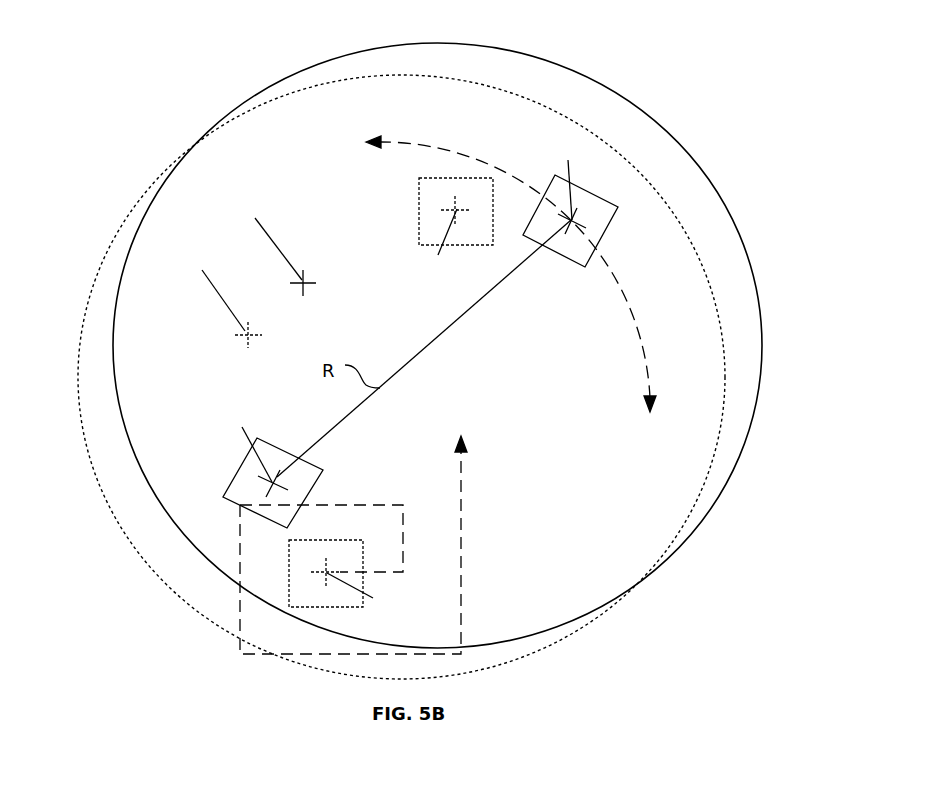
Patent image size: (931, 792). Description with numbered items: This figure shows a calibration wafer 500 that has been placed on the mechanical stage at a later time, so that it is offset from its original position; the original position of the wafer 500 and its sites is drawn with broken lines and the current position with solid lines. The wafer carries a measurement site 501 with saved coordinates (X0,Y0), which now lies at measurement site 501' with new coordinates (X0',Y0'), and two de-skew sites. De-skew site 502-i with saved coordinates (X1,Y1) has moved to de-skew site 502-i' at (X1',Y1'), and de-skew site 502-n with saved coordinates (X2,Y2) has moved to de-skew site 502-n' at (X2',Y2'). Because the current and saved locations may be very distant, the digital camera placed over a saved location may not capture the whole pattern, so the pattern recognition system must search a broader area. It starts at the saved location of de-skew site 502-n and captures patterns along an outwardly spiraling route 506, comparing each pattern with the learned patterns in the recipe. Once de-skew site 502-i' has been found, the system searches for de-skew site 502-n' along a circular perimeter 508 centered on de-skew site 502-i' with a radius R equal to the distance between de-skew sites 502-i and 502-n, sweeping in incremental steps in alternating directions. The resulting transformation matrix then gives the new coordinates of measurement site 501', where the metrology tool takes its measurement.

The wafer 500 is at (723, 277).
The measurement site 501 is at (209, 321).
The measurement site 501' is at (306, 247).
The de-skew site 502-i is at (412, 232).
The de-skew site 502-i' is at (615, 206).
The de-skew site 502-n is at (370, 588).
The de-skew site 502-n' is at (306, 464).
The outwardly spiraling route 506 is at (462, 547).
The circular perimeter 508 is at (645, 352).